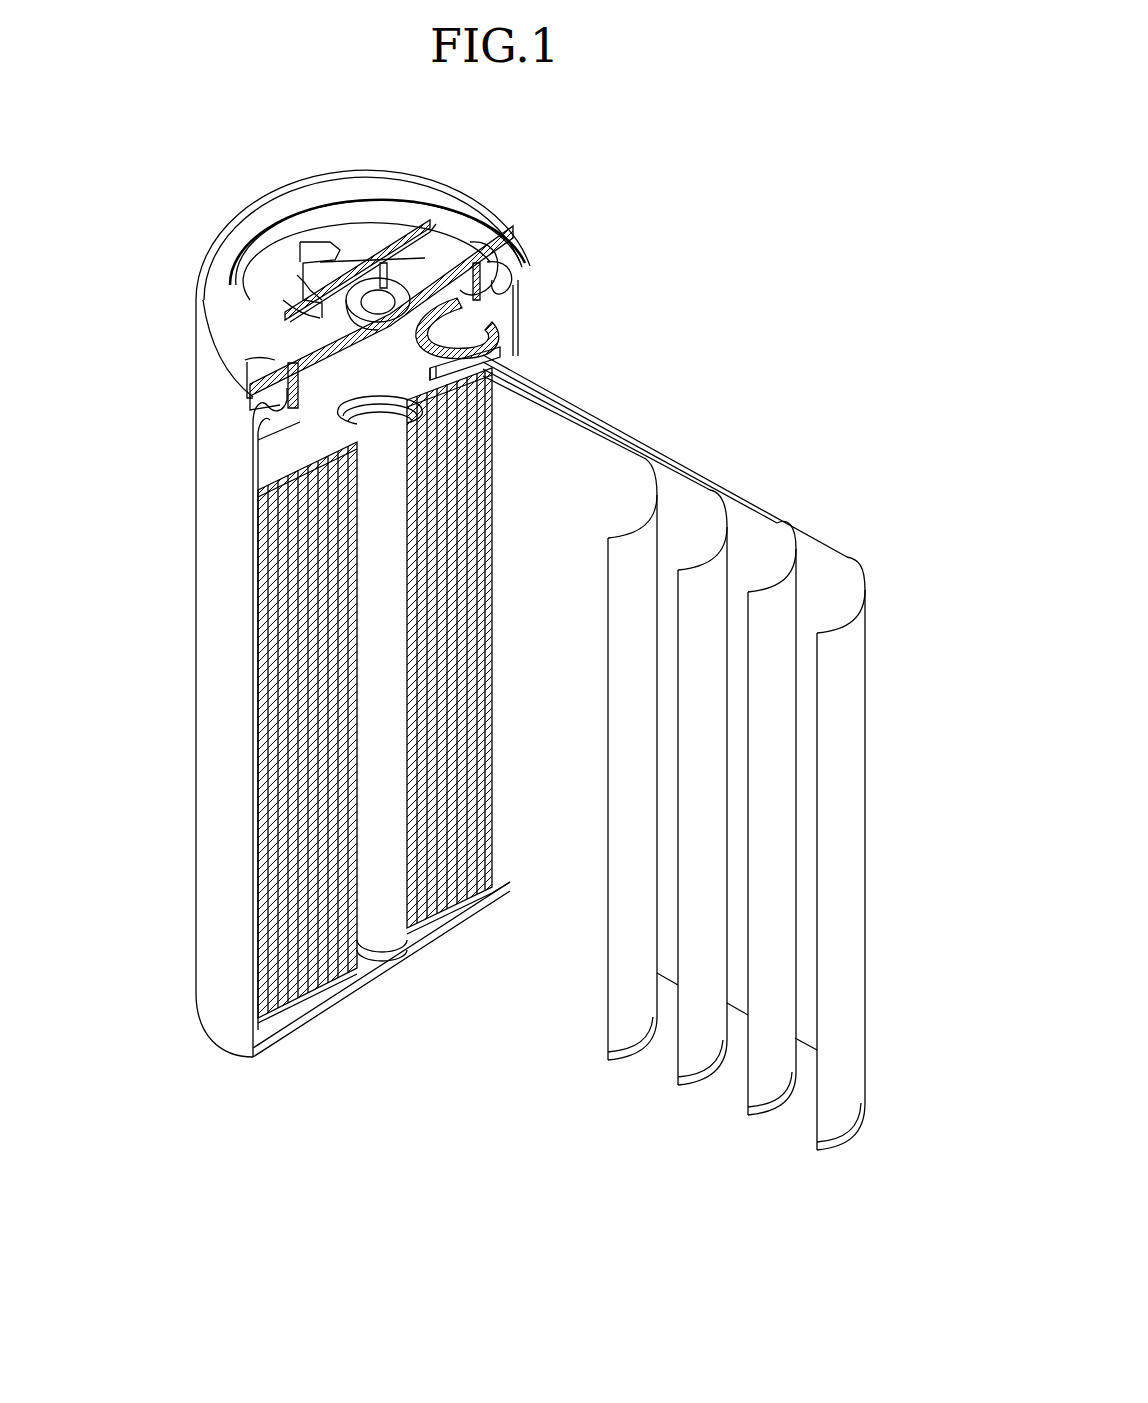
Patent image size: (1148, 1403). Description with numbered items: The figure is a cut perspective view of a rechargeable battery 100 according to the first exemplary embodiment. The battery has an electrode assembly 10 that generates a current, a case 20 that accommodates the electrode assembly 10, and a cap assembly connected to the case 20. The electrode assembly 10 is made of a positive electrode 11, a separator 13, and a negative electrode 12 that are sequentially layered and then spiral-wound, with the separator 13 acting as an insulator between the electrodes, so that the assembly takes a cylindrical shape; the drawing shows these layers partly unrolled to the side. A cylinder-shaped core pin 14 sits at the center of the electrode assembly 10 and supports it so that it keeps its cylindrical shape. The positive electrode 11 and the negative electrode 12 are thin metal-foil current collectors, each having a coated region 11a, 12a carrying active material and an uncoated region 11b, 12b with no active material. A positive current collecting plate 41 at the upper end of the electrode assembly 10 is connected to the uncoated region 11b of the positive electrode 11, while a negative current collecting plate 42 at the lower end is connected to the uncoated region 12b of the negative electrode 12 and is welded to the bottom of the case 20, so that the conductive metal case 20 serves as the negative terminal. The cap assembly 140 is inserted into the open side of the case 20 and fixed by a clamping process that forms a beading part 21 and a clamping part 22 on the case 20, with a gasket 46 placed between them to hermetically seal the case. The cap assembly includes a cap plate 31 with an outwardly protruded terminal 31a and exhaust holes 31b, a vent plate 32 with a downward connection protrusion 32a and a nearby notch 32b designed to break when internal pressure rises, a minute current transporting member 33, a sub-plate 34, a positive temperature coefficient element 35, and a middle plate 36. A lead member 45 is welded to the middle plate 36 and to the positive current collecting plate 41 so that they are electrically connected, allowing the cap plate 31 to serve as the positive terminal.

The rechargeable battery 100 is at (407, 91).
The electrode assembly 10 is at (446, 915).
The positive electrode 11 is at (679, 738).
The coated region 11a is at (780, 617).
The uncoated region 11b is at (753, 513).
The negative electrode 12 is at (570, 774).
The coated region 12a is at (617, 1007).
The uncoated region 12b is at (617, 1057).
The separator 13 is at (697, 1067).
The core pin 14 is at (393, 910).
The case 20 is at (200, 606).
The beading part 21 is at (247, 408).
The clamping part 22 is at (247, 377).
The cap plate 31 is at (453, 227).
The terminal 31a is at (337, 258).
The exhaust holes 31b is at (297, 275).
The vent plate 32 is at (510, 230).
The connection protrusion 32a is at (377, 303).
The notch 32b is at (410, 257).
The minute current transporting member 33 is at (478, 276).
The sub-plate 34 is at (470, 336).
The positive temperature coefficient (PTC) element 35 is at (490, 233).
The middle plate 36 is at (507, 303).
The positive current collecting plate 41 is at (268, 455).
The negative current collecting plate 42 is at (317, 997).
The lead member 45 is at (490, 337).
The gasket 46 is at (240, 343).
The cap assembly 140 is at (616, 138).